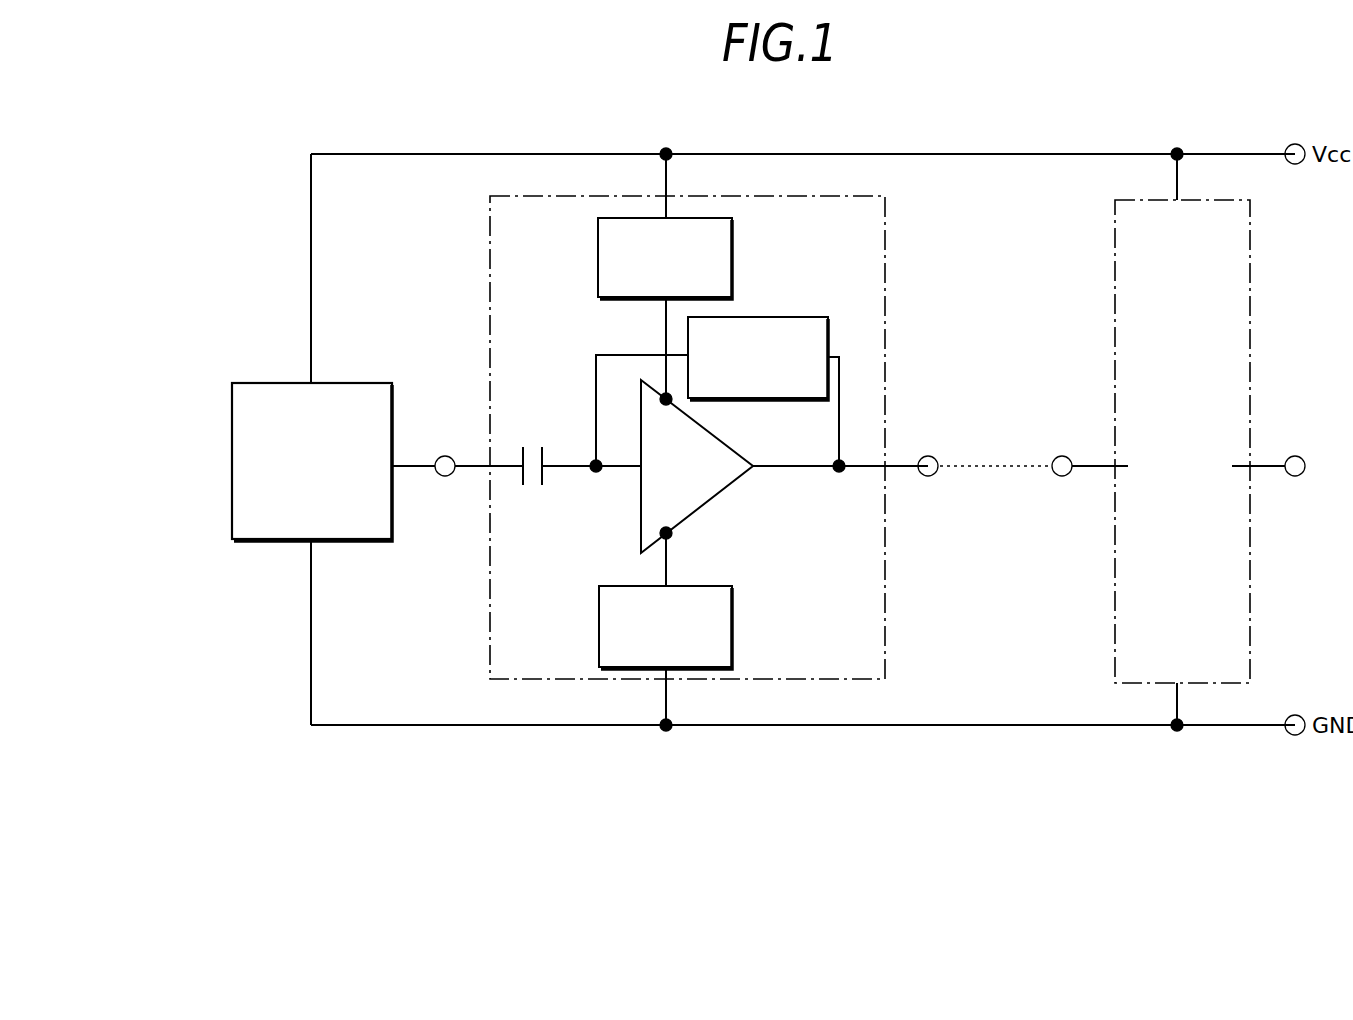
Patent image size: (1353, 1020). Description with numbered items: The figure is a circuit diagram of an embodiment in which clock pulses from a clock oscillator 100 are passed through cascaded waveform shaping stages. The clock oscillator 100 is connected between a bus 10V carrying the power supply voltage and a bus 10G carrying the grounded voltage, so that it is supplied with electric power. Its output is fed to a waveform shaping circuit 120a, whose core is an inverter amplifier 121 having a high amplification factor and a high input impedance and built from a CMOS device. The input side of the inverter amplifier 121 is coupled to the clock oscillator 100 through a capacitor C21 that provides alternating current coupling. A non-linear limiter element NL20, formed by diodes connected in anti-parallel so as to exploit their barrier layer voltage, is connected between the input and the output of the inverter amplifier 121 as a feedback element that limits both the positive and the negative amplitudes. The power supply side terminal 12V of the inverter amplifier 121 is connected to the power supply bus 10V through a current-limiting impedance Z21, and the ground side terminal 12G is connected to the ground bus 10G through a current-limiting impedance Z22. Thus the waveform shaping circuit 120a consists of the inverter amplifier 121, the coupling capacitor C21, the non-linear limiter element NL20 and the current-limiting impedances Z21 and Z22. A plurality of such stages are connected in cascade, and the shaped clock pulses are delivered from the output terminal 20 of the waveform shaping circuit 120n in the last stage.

The clock oscillator 100 is at (252, 382).
The power supply bus 10V is at (413, 153).
The ground bus 10G is at (975, 724).
The waveform shaping circuit 120a is at (885, 228).
The waveform shaping circuit in the last stage 120n is at (1115, 298).
The output terminal 20 is at (1298, 455).
The current-limiting impedance Z21 is at (598, 262).
The current-limiting impedance Z22 is at (599, 618).
The capacitor C21 is at (538, 440).
The non-linear limiter element NL20 is at (760, 316).
The power supply side terminal 12V is at (672, 402).
The ground side terminal 12G is at (672, 535).
The inverter amplifier 121 is at (720, 490).